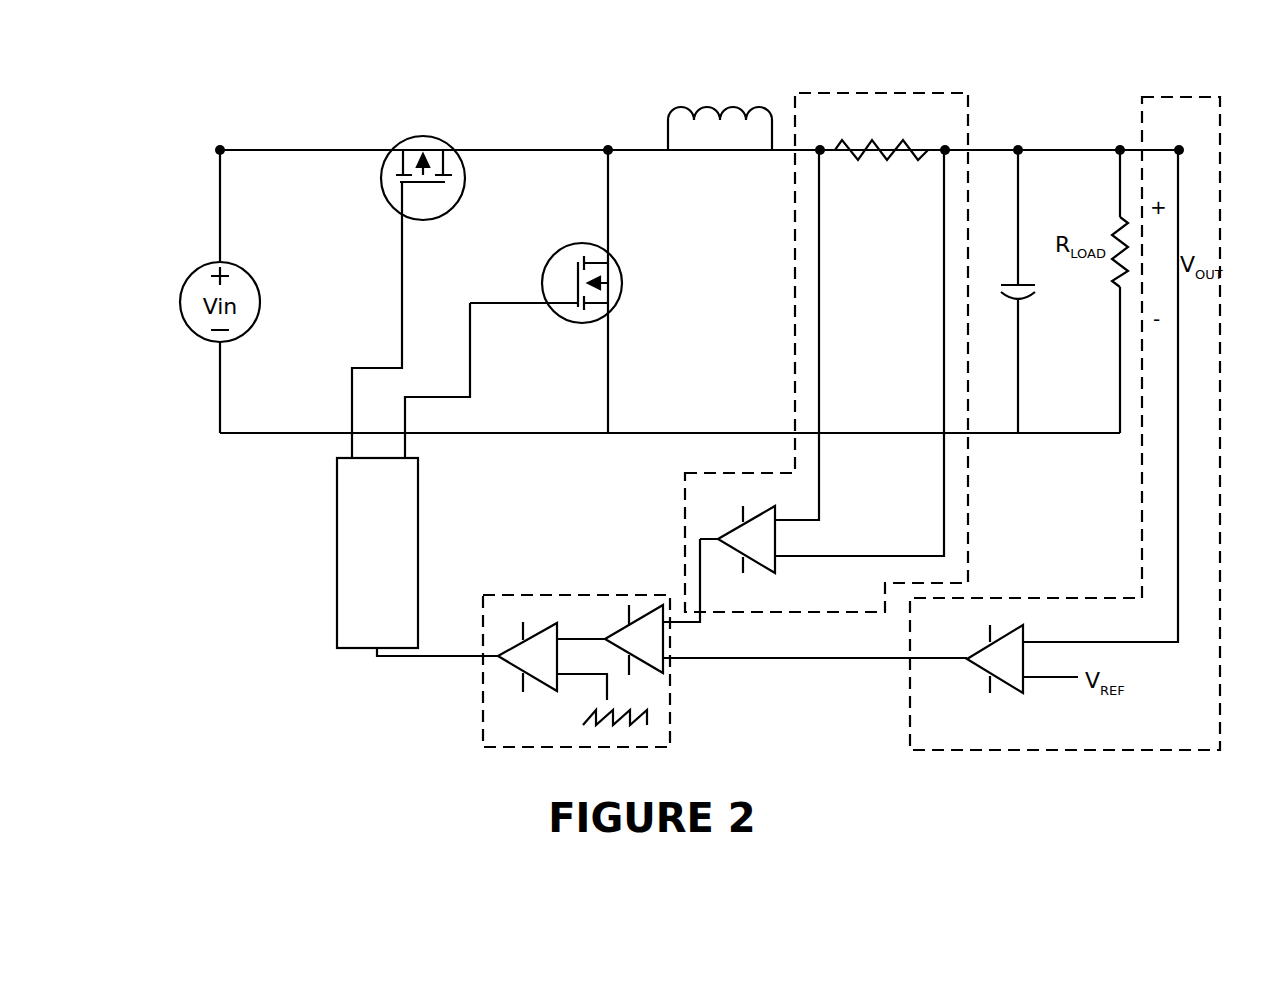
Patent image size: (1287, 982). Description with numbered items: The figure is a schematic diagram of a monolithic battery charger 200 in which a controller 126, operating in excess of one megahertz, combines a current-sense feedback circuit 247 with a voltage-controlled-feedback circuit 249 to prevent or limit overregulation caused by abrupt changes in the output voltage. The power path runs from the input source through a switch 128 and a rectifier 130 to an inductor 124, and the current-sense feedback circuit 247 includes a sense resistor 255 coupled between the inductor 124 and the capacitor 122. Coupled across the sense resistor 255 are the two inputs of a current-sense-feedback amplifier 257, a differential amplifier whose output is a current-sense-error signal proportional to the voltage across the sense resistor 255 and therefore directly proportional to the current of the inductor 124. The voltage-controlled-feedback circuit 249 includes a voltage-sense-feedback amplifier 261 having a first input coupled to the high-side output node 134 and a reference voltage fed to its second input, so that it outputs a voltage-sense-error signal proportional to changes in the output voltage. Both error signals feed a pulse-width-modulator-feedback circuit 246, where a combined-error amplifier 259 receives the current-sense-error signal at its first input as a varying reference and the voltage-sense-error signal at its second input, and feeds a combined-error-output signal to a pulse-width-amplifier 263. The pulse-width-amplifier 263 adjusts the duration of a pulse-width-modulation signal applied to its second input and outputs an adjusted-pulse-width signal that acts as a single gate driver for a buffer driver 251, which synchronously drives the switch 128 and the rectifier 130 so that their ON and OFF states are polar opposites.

The monolithic battery charger 200 is at (696, 56).
The switch 128 is at (448, 148).
The rectifier 130 is at (610, 257).
The inductor 124 is at (694, 122).
The sense resistor 255 is at (858, 160).
The high-side output node 134 is at (1179, 150).
The capacitor 122 is at (1020, 296).
The voltage-controlled-feedback circuit 249 is at (1181, 94).
The current-sense feedback circuit 247 is at (968, 507).
The pulse-width-modulator-feedback circuit 246 is at (537, 595).
The buffer driver 251 is at (337, 552).
The current-sense-feedback amplifier 257 is at (735, 527).
The combined-error amplifier 259 is at (667, 662).
The pulse-width-amplifier 263 is at (512, 664).
The voltage-sense-feedback amplifier 261 is at (1010, 687).
The controller 126 is at (420, 747).